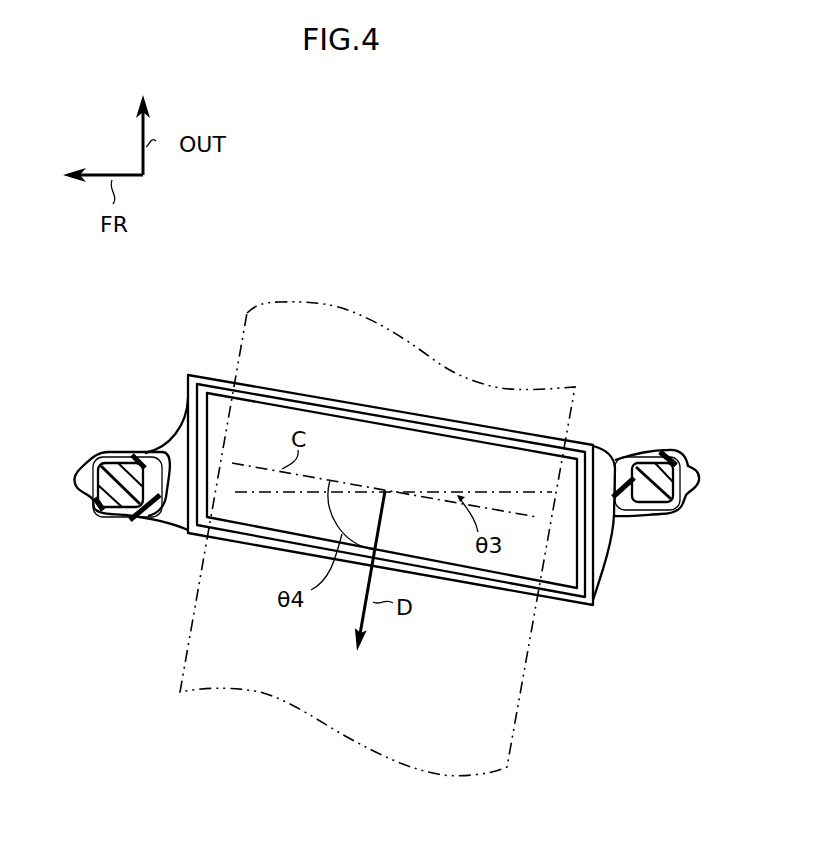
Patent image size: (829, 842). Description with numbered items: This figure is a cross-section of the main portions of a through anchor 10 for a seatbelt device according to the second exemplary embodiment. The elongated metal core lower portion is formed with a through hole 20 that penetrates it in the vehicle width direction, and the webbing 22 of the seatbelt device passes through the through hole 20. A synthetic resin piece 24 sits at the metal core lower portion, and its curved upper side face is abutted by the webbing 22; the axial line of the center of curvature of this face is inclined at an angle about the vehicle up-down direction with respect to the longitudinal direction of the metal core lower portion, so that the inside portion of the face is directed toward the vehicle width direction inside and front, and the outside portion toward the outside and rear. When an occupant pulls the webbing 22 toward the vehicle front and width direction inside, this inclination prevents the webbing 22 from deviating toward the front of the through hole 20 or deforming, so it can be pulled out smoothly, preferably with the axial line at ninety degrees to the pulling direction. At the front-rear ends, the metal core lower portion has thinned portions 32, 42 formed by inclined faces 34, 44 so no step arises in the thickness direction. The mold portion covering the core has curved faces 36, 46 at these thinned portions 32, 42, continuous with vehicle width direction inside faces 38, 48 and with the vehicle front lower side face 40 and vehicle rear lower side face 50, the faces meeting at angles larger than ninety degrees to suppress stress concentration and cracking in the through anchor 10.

The through anchor 10 is at (527, 353).
The through hole 20 is at (627, 483).
The webbing 22 is at (432, 357).
The piece 24 is at (332, 398).
The thinned portion 32 is at (99, 504).
The inclined face 34 is at (103, 514).
The curved face 36 is at (98, 513).
The vehicle width direction inside face 38 is at (113, 521).
The vehicle front lower side face 40 is at (92, 492).
The thinned portion 42 is at (668, 458).
The inclined face 44 is at (673, 510).
The curved face 46 is at (674, 513).
The vehicle width direction inside face 48 is at (661, 520).
The vehicle rear lower side face 50 is at (680, 507).